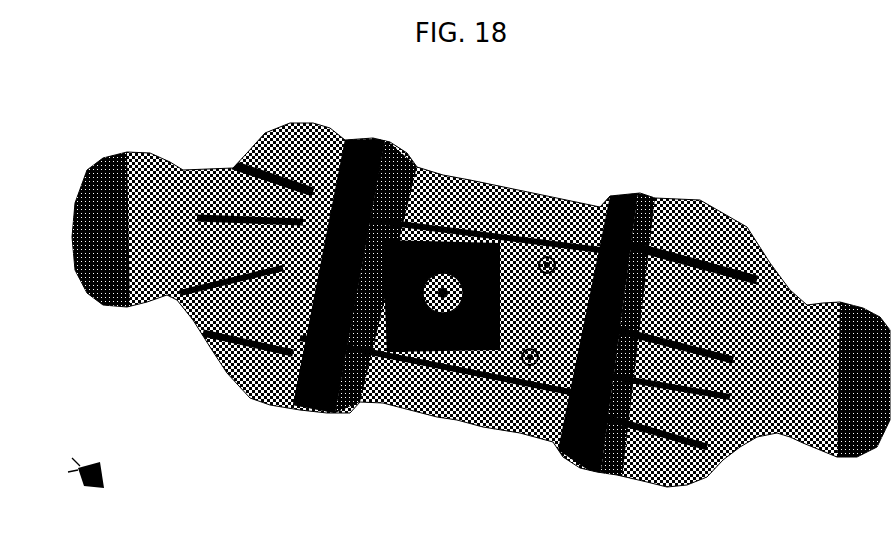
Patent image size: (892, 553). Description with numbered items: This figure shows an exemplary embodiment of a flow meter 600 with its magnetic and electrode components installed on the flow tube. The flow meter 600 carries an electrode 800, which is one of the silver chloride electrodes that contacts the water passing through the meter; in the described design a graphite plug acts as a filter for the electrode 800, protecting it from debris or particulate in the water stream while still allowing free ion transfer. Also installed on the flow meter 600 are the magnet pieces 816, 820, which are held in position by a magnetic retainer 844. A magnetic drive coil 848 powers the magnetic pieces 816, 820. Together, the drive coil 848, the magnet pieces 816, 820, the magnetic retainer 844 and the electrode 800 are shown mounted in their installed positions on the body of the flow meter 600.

The flow meter 600 is at (566, 190).
The electrode 800 is at (447, 320).
The magnet piece 816 is at (490, 237).
The magnet piece 820 is at (522, 364).
The magnetic retainer 844 is at (377, 255).
The magnetic drive coil 848 is at (400, 330).